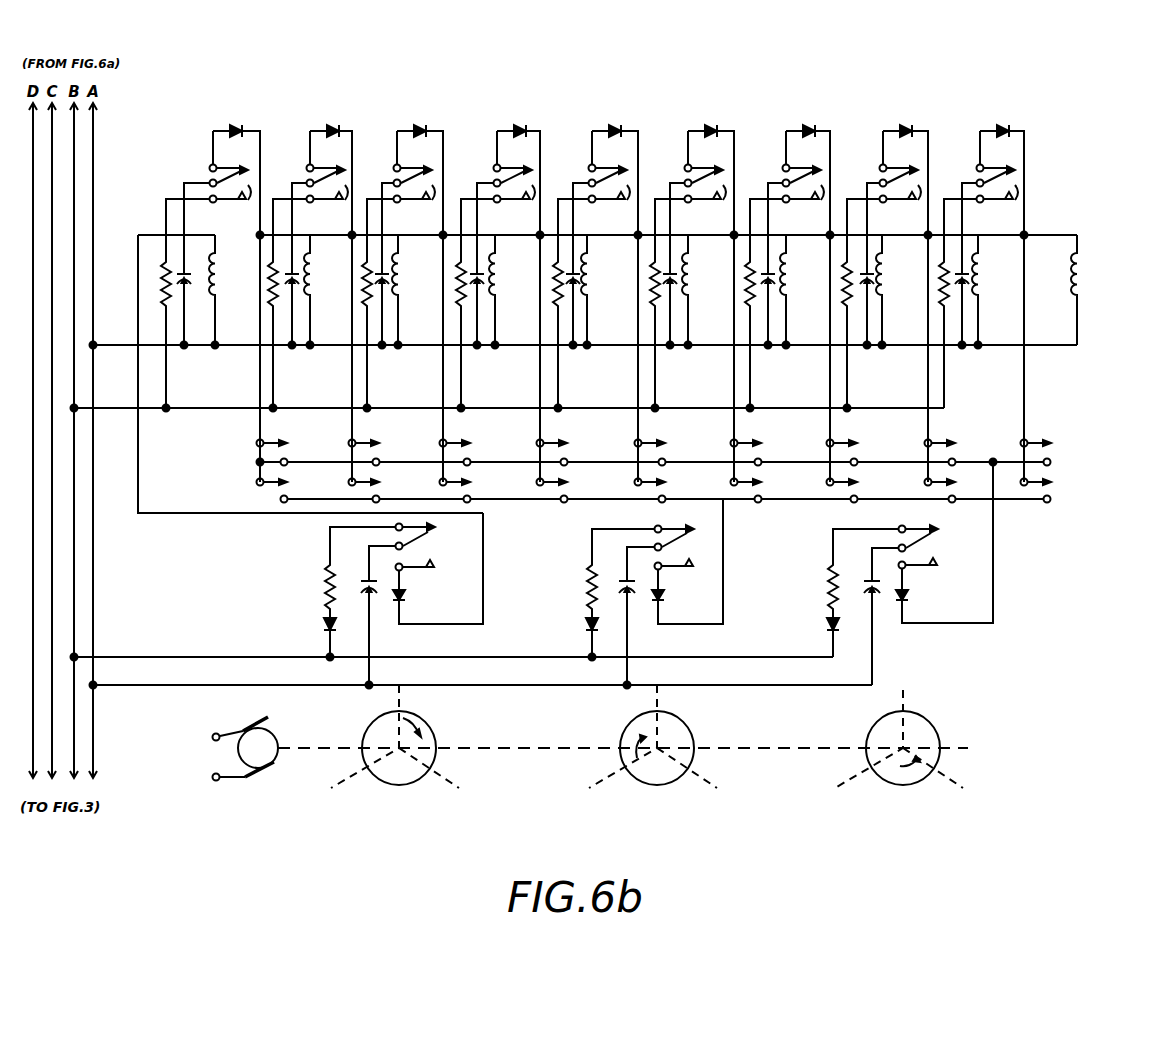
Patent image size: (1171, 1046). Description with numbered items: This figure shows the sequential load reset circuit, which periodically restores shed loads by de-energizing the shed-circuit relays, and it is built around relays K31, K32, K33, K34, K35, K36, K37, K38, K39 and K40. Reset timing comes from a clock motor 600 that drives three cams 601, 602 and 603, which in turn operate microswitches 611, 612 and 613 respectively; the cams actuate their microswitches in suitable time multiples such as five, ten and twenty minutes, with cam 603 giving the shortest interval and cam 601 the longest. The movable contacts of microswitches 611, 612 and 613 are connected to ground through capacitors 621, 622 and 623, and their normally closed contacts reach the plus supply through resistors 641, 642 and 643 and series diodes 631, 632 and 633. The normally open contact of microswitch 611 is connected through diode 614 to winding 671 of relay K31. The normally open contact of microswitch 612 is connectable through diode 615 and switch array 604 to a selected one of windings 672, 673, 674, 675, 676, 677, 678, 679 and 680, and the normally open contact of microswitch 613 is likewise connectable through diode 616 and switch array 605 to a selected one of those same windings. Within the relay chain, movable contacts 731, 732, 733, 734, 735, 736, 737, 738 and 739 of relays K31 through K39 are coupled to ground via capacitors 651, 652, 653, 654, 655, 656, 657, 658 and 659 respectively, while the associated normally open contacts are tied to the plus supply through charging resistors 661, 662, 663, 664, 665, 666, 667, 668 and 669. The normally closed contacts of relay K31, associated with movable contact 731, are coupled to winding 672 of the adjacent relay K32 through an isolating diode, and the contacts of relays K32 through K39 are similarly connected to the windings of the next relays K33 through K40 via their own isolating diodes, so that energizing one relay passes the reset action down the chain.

The clock motor 600 is at (270, 768).
The cam 601 is at (412, 782).
The cam 602 is at (672, 782).
The cam 603 is at (918, 782).
The switch array 604 is at (1054, 493).
The switch array 605 is at (1054, 456).
The microswitch 611 is at (433, 549).
The microswitch 612 is at (686, 549).
The microswitch 613 is at (937, 549).
The diode 614 is at (405, 598).
The diode 615 is at (664, 598).
The diode 616 is at (907, 600).
The capacitor 621 is at (378, 594).
The capacitor 622 is at (636, 594).
The capacitor 623 is at (882, 594).
The series diode 631 is at (324, 624).
The series diode 632 is at (586, 624).
The series diode 633 is at (827, 624).
The resistor 641 is at (328, 578).
The resistor 642 is at (590, 578).
The resistor 643 is at (831, 578).
The capacitor 651 is at (177, 272).
The capacitor 652 is at (288, 296).
The capacitor 653 is at (388, 286).
The capacitor 654 is at (483, 286).
The capacitor 655 is at (579, 286).
The capacitor 656 is at (676, 286).
The capacitor 657 is at (774, 286).
The capacitor 658 is at (873, 286).
The capacitor 659 is at (968, 286).
The charging resistor 661 is at (162, 276).
The charging resistor 662 is at (271, 289).
The charging resistor 663 is at (365, 287).
The charging resistor 664 is at (459, 285).
The charging resistor 665 is at (556, 285).
The charging resistor 666 is at (653, 285).
The charging resistor 667 is at (748, 285).
The charging resistor 668 is at (845, 285).
The charging resistor 669 is at (942, 285).
The winding 671 is at (219, 285).
The winding 672 is at (315, 286).
The winding 673 is at (403, 286).
The winding 674 is at (500, 286).
The winding 675 is at (592, 286).
The winding 676 is at (693, 286).
The winding 677 is at (791, 286).
The winding 678 is at (887, 286).
The winding 679 is at (983, 286).
The winding 680 is at (1085, 272).
The movable contact 731 is at (233, 196).
The movable contact 732 is at (330, 196).
The movable contact 733 is at (417, 196).
The movable contact 734 is at (517, 196).
The movable contact 735 is at (612, 196).
The movable contact 736 is at (708, 196).
The movable contact 737 is at (806, 196).
The movable contact 738 is at (903, 196).
The movable contact 739 is at (1000, 196).
The relay K31 is at (291, 319).
The relay K32 is at (288, 303).
The relay K33 is at (380, 303).
The relay K34 is at (476, 303).
The relay K35 is at (573, 303).
The relay K36 is at (667, 303).
The relay K37 is at (766, 303).
The relay K38 is at (864, 303).
The relay K39 is at (960, 303).
The relay K40 is at (1098, 304).